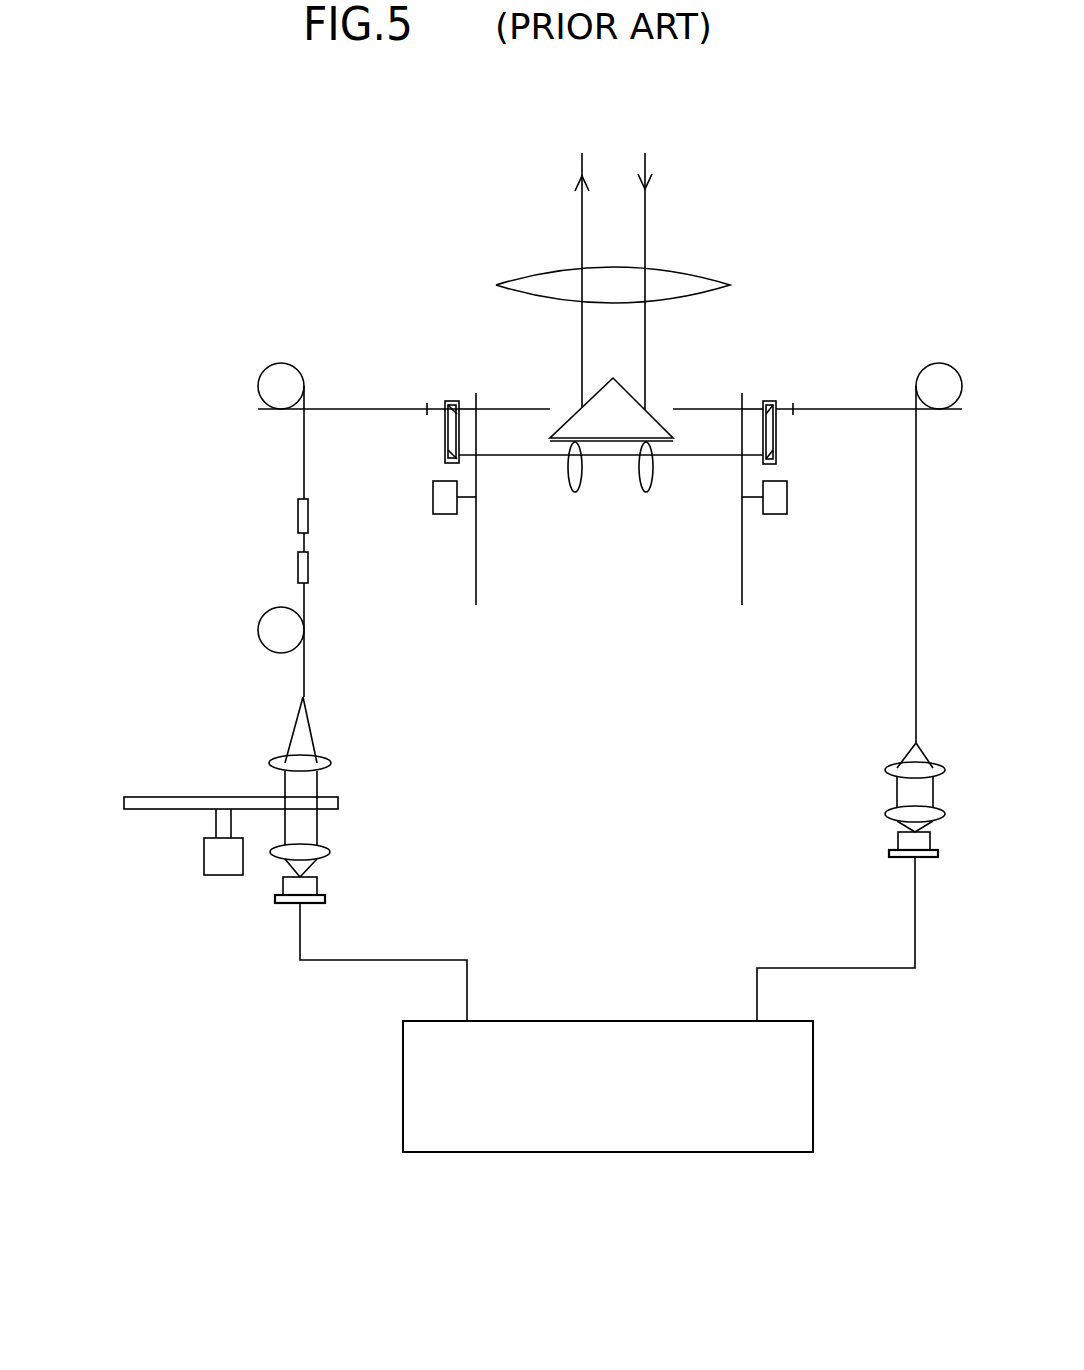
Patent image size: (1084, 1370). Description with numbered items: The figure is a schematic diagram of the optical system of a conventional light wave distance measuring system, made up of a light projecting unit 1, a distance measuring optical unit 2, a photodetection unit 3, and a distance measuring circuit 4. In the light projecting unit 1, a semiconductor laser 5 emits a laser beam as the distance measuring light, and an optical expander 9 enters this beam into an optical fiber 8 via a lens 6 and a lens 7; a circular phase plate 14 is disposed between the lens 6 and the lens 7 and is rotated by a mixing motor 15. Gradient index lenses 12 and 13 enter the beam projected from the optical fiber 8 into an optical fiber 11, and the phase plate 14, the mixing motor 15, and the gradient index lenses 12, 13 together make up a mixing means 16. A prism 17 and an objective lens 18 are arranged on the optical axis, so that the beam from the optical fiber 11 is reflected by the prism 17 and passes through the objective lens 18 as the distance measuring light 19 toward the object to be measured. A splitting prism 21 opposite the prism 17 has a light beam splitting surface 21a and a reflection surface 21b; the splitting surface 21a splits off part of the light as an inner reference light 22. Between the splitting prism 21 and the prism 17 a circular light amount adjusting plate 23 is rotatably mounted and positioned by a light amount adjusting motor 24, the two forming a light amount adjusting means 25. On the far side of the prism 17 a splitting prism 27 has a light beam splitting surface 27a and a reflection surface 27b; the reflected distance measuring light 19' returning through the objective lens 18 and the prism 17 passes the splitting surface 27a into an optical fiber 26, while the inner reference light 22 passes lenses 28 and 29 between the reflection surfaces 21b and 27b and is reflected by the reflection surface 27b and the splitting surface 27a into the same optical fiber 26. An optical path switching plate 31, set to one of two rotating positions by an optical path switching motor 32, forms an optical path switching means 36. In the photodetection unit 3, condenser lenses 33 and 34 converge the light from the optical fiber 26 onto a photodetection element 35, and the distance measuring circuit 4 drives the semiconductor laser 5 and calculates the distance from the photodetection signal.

The light projecting unit 1 is at (207, 678).
The distance measuring optical unit 2 is at (738, 272).
The photodetection unit 3 is at (945, 756).
The distance measuring circuit 4 is at (682, 1021).
The semiconductor laser 5 is at (326, 898).
The lens 6 is at (331, 852).
The lens 7 is at (331, 763).
The optical fiber 8 is at (305, 656).
The optical expander 9 is at (265, 750).
The optical fiber 11 is at (338, 407).
The gradient index lens 12 is at (297, 568).
The gradient index lens 13 is at (297, 515).
The phase plate 14 is at (174, 797).
The mixing motor 15 is at (222, 876).
The mixing means 16 is at (136, 829).
The prism 17 is at (606, 398).
The objective lens 18 is at (530, 270).
The distance measuring light 19 is at (537, 280).
The reflected distance measuring light 19' is at (698, 281).
The splitting prism 21 is at (449, 400).
The light beam splitting surface 21a is at (443, 410).
The reflection surface 21b is at (443, 456).
The inner reference light 22 is at (608, 458).
The light amount adjusting plate 23 is at (477, 565).
The light amount adjusting motor 24 is at (437, 514).
The light amount adjusting means 25 is at (456, 535).
The optical fiber 26 is at (866, 408).
The splitting prism 27 is at (770, 402).
The light beam splitting surface 27a is at (778, 412).
The reflection surface 27b is at (778, 460).
The lens 28 is at (572, 492).
The lens 29 is at (652, 472).
The optical path switching plate 31 is at (741, 570).
The optical path switching motor 32 is at (777, 514).
The condenser lens 33 is at (890, 763).
The condenser lens 34 is at (890, 811).
The photodetection element 35 is at (897, 843).
The optical path switching means 36 is at (758, 538).